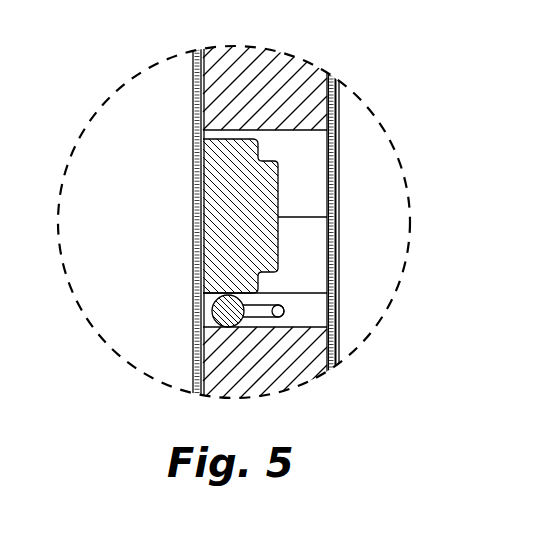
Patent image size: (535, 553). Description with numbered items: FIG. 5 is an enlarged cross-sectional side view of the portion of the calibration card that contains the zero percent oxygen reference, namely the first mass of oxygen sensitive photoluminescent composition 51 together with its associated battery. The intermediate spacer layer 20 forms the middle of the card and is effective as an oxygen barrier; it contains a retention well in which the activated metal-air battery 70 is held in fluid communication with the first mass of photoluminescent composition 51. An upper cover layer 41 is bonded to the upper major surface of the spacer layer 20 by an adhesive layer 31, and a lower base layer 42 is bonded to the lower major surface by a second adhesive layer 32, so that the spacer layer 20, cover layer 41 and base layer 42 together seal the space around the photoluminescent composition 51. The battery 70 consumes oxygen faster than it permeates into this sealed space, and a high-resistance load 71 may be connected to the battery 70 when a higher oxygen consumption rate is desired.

The intermediate spacer layer 20 is at (272, 364).
The adhesive layer 31 is at (326, 83).
The upper cover layer 41 is at (339, 88).
The first mass of oxygen sensitive photoluminescent composition 51 is at (338, 230).
The activated metal-air battery 70 is at (222, 224).
The load 71 is at (225, 308).
The lower base layer 42 is at (193, 367).
The adhesive layer 32 is at (204, 376).